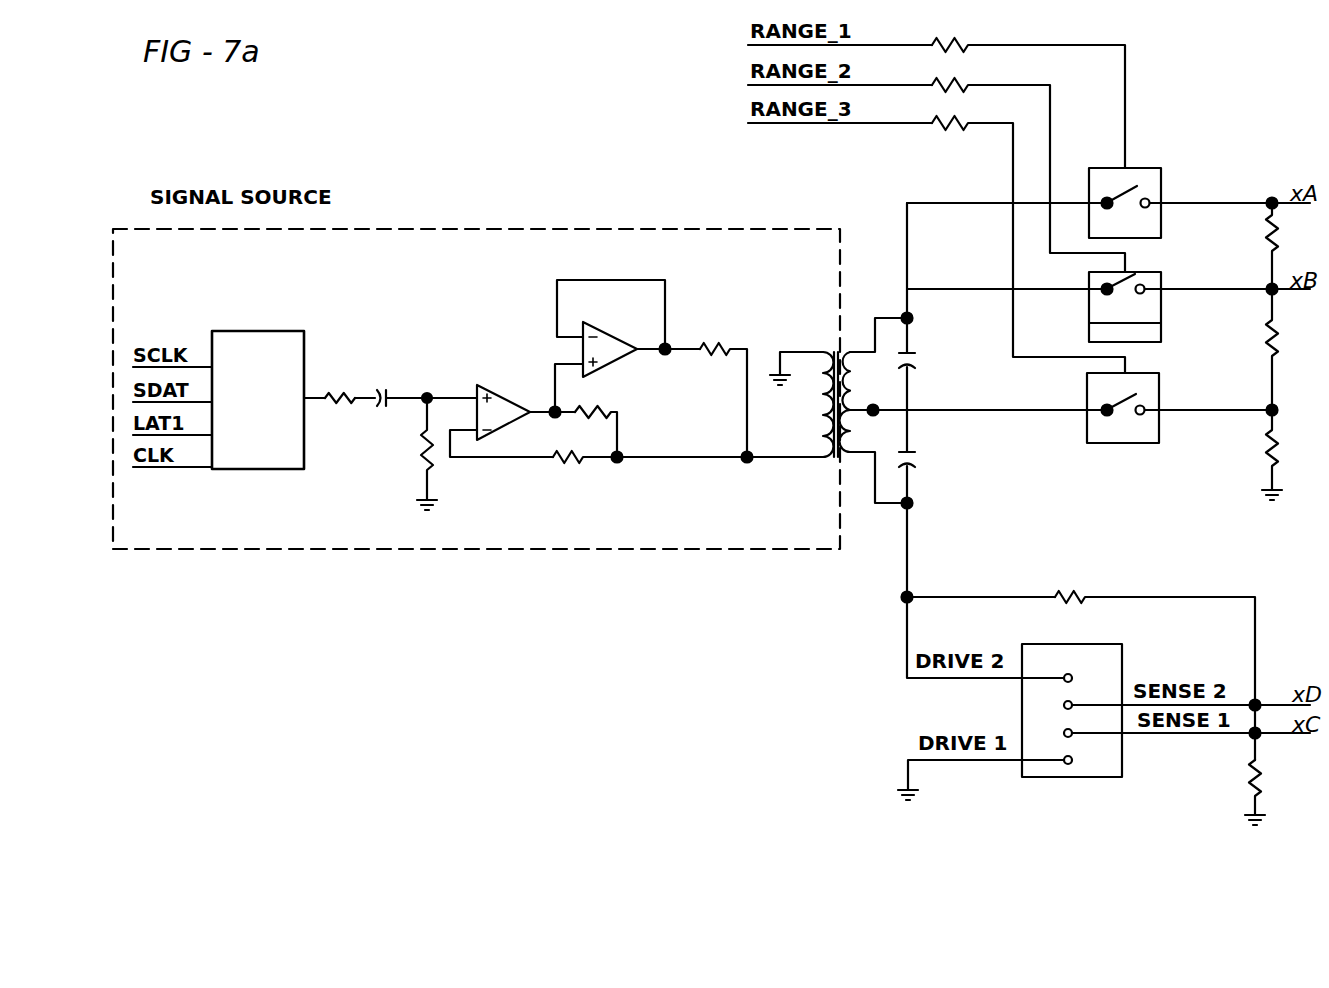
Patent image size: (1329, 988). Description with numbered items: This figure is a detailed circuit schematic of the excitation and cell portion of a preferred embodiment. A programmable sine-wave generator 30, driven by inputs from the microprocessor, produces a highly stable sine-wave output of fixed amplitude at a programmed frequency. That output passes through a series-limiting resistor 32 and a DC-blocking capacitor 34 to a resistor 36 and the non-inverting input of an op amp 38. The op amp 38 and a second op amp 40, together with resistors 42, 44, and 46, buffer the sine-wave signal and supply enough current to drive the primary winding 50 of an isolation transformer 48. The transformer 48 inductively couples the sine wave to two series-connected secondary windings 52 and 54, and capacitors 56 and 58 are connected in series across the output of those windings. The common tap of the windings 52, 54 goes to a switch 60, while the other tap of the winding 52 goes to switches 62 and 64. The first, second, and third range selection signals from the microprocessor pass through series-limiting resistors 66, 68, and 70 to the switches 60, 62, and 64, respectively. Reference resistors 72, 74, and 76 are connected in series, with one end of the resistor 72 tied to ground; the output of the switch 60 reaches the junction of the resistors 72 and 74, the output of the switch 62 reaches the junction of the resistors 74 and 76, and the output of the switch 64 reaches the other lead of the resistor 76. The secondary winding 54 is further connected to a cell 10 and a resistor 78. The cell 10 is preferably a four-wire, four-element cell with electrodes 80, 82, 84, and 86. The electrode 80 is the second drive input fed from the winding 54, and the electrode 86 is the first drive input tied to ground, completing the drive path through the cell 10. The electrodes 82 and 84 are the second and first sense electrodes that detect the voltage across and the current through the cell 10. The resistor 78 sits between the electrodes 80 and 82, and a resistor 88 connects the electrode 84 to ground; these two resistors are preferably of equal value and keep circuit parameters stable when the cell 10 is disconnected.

The cell 10 is at (1100, 644).
The programmable sine-wave generator 30 is at (297, 331).
The series-limiting resistor 32 is at (330, 395).
The DC-blocking capacitor 34 is at (385, 392).
The resistor 36 is at (422, 440).
The op amp 38 is at (496, 383).
The op amp 40 is at (597, 325).
The resistor 42 is at (567, 460).
The resistor 44 is at (600, 412).
The resistor 46 is at (718, 345).
The isolation transformer 48 is at (938, 398).
The primary winding 50 is at (826, 403).
The secondary winding 52 is at (857, 382).
The secondary winding 54 is at (857, 428).
The capacitor 56 is at (918, 362).
The capacitor 58 is at (918, 470).
The switch 60 is at (1085, 440).
The switch 62 is at (1089, 318).
The switch 64 is at (1165, 178).
The series-limiting resistor 66 is at (968, 122).
The series-limiting resistor 68 is at (968, 85).
The series-limiting resistor 70 is at (965, 38).
The reference resistor 72 is at (1266, 448).
The reference resistor 74 is at (1266, 330).
The reference resistor 76 is at (1263, 238).
The resistor 78 is at (1068, 590).
The drive electrode 80 is at (1064, 674).
The sense electrode 82 is at (1064, 705).
The sense electrode 84 is at (1064, 733).
The drive electrode 86 is at (1075, 765).
The resistor 88 is at (1252, 770).